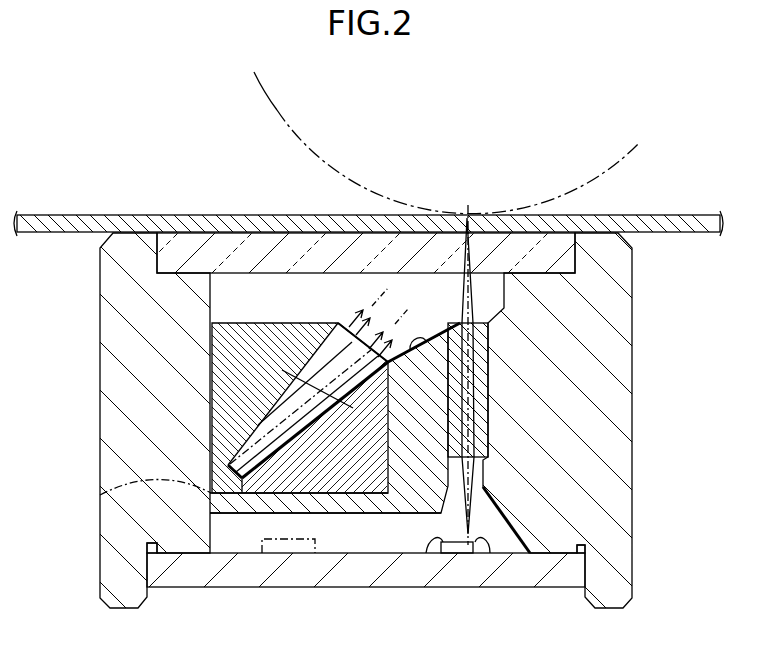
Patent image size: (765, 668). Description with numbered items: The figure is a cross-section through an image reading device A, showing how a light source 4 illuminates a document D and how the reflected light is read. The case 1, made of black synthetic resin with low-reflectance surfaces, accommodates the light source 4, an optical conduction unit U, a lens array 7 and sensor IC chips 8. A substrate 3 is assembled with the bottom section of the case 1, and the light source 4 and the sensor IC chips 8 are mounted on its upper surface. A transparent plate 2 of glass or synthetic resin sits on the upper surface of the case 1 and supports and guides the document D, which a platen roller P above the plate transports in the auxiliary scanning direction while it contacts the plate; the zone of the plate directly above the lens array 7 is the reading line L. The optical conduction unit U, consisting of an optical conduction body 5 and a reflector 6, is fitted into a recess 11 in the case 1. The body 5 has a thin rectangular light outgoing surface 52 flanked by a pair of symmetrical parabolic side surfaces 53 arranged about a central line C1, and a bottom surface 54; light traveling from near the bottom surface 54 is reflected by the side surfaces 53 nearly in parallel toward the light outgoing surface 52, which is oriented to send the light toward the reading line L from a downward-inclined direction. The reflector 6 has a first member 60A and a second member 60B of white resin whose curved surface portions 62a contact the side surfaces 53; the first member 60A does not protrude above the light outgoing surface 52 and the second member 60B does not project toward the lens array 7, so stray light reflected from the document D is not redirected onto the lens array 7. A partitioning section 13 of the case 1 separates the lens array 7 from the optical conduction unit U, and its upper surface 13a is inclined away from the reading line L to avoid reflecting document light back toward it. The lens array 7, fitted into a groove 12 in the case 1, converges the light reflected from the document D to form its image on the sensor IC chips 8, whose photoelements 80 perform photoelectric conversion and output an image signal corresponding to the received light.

The case 1 is at (616, 344).
The transparent plate 2 is at (211, 240).
The substrate 3 is at (268, 587).
The light source 4 is at (290, 548).
The optical conduction body 5 is at (287, 326).
The reflector 6 is at (246, 314).
The lens array 7 is at (498, 430).
The sensor IC chip 8 is at (456, 553).
The recess 11 is at (333, 500).
The groove 12 is at (490, 381).
The partitioning section 13 is at (335, 387).
The upper surface 13a is at (415, 356).
The light outgoing surface 52 is at (356, 310).
The side surfaces 53 is at (300, 366).
The bottom surface 54 is at (228, 467).
The first member 60A is at (212, 372).
The second member 60B is at (413, 511).
The curved surface portions 62a is at (311, 407).
The photoelements 80 is at (486, 553).
The document D is at (58, 217).
The platen roller P is at (277, 110).
The reading line L is at (467, 232).
The image reading device A is at (652, 197).
The optical conduction unit U is at (201, 410).
The central line C1 is at (93, 495).